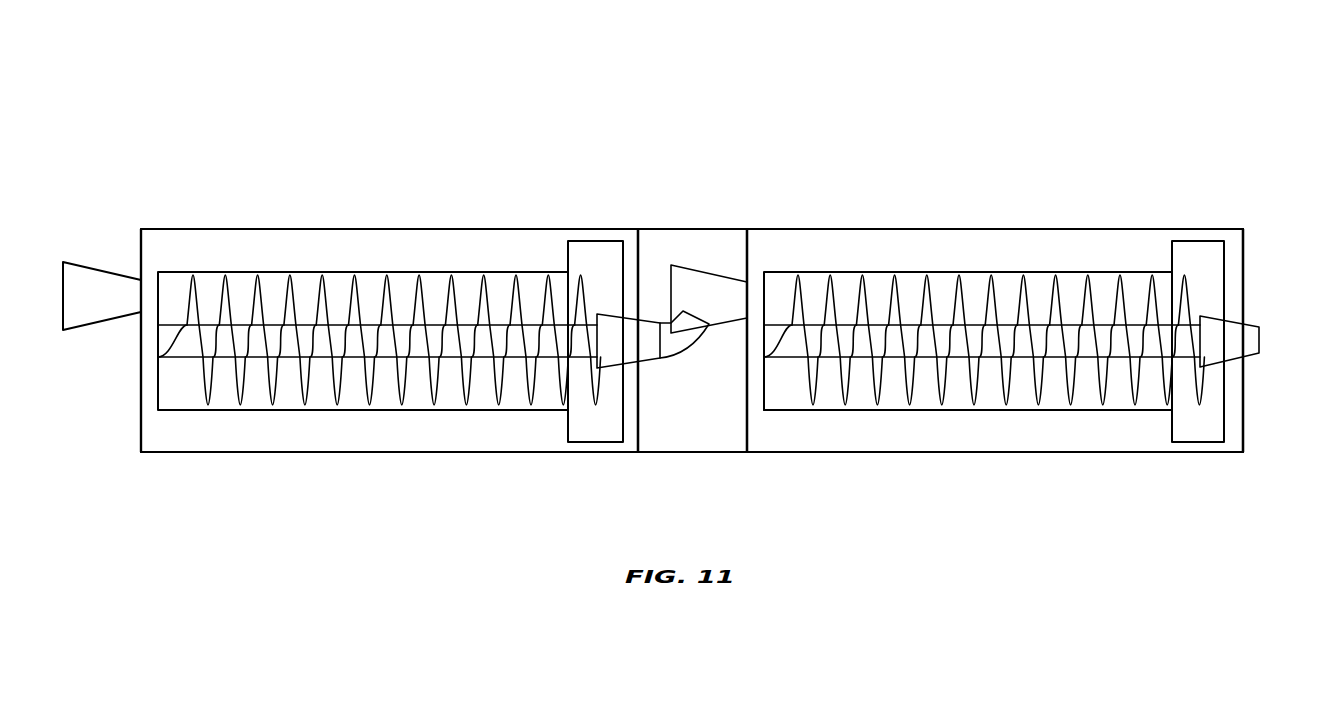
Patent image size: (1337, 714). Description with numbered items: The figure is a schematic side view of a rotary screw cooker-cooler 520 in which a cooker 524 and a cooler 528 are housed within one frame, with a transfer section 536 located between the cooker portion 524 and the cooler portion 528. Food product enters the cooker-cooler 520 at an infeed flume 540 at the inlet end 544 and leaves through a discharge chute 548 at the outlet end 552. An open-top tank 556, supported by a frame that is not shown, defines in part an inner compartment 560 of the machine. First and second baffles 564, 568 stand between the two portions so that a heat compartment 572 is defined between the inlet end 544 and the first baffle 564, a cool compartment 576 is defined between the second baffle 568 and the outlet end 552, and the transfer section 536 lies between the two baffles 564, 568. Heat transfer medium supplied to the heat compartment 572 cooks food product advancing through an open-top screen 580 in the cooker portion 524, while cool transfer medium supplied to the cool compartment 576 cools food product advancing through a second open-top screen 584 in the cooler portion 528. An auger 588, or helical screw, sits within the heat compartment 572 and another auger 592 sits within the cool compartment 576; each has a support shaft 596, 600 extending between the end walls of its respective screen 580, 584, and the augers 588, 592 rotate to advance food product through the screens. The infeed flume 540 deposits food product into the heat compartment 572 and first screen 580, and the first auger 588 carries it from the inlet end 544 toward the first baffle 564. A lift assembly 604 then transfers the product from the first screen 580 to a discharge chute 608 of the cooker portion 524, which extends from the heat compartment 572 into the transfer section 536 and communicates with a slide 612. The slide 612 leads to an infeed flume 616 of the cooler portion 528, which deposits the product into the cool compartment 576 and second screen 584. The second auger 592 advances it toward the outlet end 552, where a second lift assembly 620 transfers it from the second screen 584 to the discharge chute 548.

The rotary screw cooker-cooler 520 is at (380, 108).
The cooker 524 is at (417, 222).
The cooler 528 is at (793, 222).
The transfer section 536 is at (713, 458).
The infeed flume 540 is at (93, 278).
The inlet end 544 is at (175, 235).
The discharge chute 548 is at (1252, 350).
The outlet end 552 is at (1232, 238).
The open-top tank 556 is at (950, 453).
The inner compartment 560 is at (1005, 436).
The first baffle 564 is at (633, 427).
The second baffle 568 is at (747, 422).
The heat compartment 572 is at (247, 440).
The cool compartment 576 is at (995, 245).
The open-top screen 580 is at (247, 272).
The open-top screen 584 is at (913, 270).
The auger 588 is at (345, 382).
The auger 592 is at (885, 390).
The support shaft 596 is at (273, 330).
The support shaft 600 is at (1092, 350).
The lift assembly 604 is at (597, 248).
The discharge chute 608 is at (645, 355).
The slide 612 is at (680, 345).
The infeed flume 616 is at (710, 283).
The lift assembly 620 is at (1190, 248).